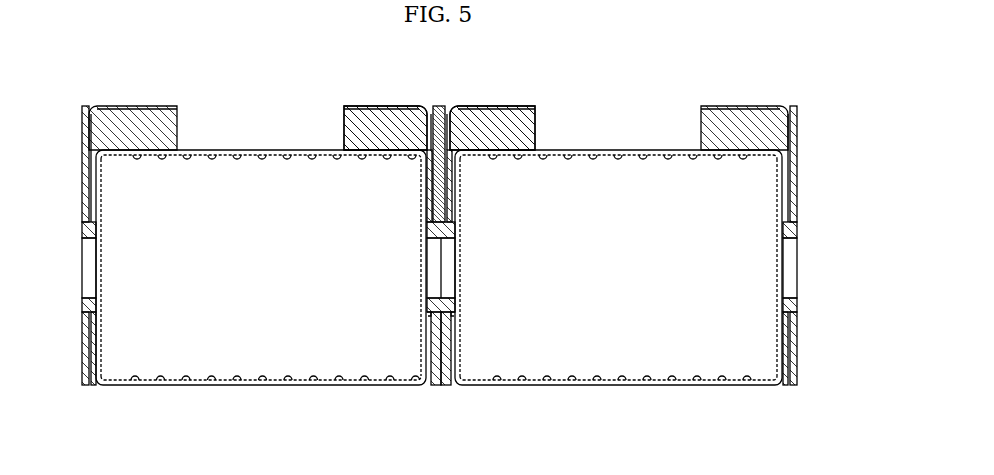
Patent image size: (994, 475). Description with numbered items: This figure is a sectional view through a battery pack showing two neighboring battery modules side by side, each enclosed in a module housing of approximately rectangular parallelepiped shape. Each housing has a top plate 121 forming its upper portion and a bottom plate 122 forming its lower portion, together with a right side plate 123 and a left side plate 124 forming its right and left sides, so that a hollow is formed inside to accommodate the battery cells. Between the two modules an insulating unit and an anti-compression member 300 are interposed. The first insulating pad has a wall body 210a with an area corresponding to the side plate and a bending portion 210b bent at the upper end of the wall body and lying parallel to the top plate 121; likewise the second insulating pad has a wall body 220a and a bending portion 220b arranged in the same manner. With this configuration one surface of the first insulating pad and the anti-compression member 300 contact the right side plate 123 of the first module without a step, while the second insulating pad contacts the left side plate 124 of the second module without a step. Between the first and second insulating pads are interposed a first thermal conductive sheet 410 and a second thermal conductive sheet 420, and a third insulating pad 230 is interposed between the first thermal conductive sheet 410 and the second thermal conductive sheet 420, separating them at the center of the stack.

The top plate 121 is at (259, 150).
The bottom plate 122 is at (282, 386).
The right side plate 123 is at (422, 338).
The left side plate 124 is at (100, 340).
The wall body 210a is at (428, 186).
The bending portion 210b is at (385, 120).
The wall body 220a is at (452, 186).
The bending portion 220b is at (493, 120).
The third insulating pad 230 is at (437, 105).
The anti-compression member 300 is at (452, 304).
The first thermal conductive sheet 410 is at (431, 387).
The second thermal conductive sheet 420 is at (448, 387).